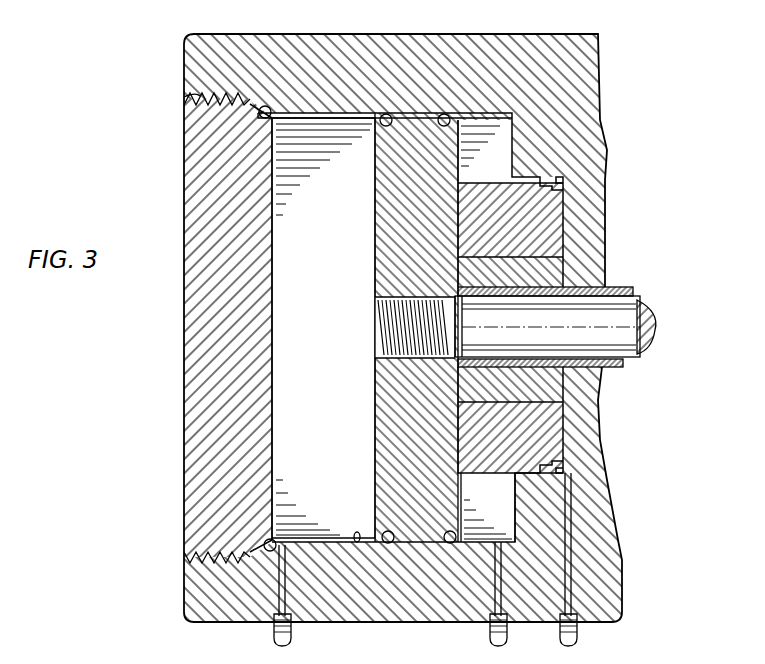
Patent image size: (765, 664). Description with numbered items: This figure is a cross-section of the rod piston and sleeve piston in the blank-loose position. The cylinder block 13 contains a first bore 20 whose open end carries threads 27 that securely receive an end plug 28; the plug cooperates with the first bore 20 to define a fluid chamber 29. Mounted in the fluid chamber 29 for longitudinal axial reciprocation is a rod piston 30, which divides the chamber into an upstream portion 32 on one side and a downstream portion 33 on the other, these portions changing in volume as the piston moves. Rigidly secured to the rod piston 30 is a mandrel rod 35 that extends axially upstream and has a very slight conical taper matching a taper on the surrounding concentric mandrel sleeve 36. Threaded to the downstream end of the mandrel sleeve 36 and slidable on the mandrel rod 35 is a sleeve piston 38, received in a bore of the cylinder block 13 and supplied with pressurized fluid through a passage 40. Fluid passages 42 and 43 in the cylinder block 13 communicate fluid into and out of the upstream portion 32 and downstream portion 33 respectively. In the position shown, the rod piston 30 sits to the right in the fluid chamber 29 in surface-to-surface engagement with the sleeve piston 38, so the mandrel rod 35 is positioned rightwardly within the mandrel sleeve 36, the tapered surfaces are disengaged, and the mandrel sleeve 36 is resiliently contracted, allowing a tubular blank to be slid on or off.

The cylinder block 13 is at (580, 107).
The first bore 20 is at (356, 542).
The threads 27 is at (190, 112).
The end plug 28 is at (200, 510).
The fluid chamber 29 is at (334, 360).
The rod piston 30 is at (378, 462).
The upstream portion 32 is at (493, 525).
The downstream portion 33 is at (292, 410).
The mandrel rod 35 is at (625, 318).
The mandrel sleeve 36 is at (622, 287).
The sleeve piston 38 is at (562, 222).
The passage 40 is at (567, 535).
The fluid passage 42 is at (497, 602).
The fluid passage 43 is at (282, 592).